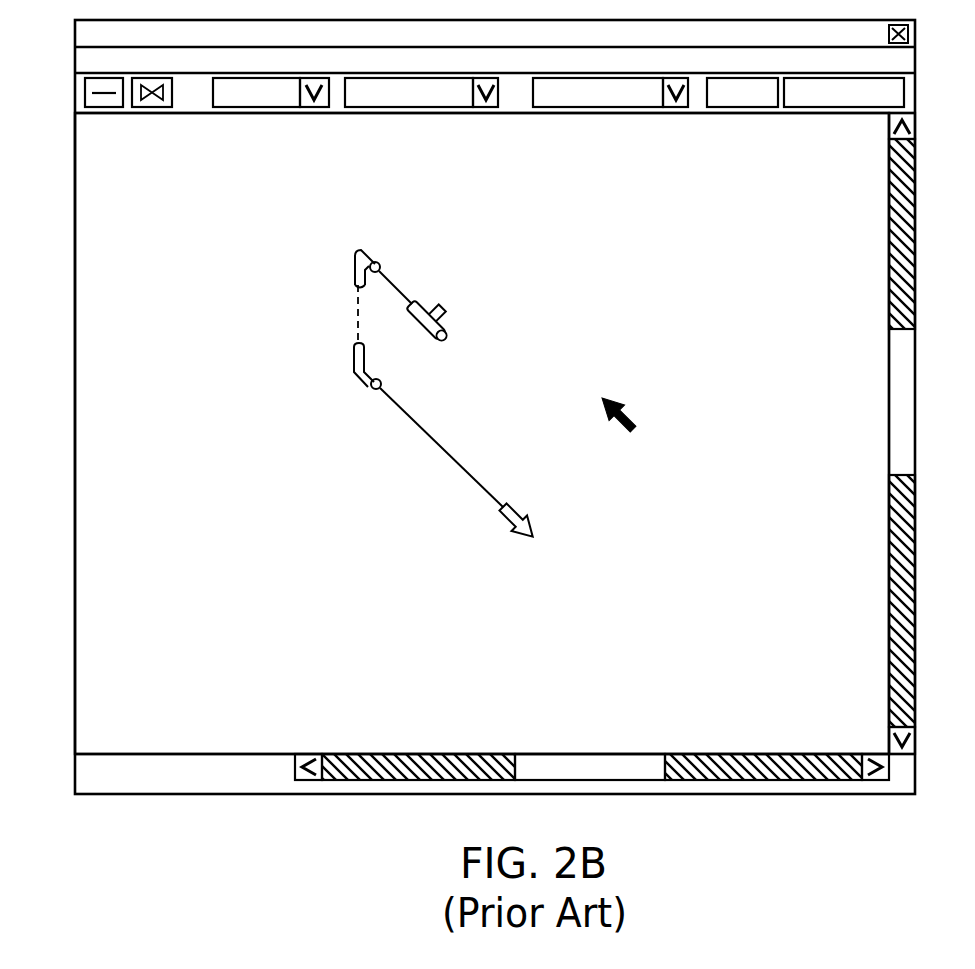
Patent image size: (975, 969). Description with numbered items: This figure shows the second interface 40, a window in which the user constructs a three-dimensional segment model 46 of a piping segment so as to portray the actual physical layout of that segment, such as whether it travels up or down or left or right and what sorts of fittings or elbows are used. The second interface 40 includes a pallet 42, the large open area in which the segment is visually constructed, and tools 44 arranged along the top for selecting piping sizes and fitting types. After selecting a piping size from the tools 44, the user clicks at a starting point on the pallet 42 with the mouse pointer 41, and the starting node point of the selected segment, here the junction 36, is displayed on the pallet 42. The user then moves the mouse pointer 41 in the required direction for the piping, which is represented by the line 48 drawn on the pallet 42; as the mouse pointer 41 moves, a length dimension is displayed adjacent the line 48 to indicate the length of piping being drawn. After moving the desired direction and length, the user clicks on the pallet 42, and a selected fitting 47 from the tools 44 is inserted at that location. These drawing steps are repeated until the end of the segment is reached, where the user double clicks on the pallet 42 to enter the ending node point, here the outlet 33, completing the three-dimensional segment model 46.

The second interface 40 is at (75, 21).
The pallet 42 is at (85, 205).
The tools 44 is at (270, 120).
The 3-D segment model 46 is at (392, 519).
The fitting 47 is at (356, 251).
The line 48 is at (397, 287).
The junction 36 is at (443, 309).
The outlet 33 is at (526, 504).
The mouse pointer 41 is at (615, 424).